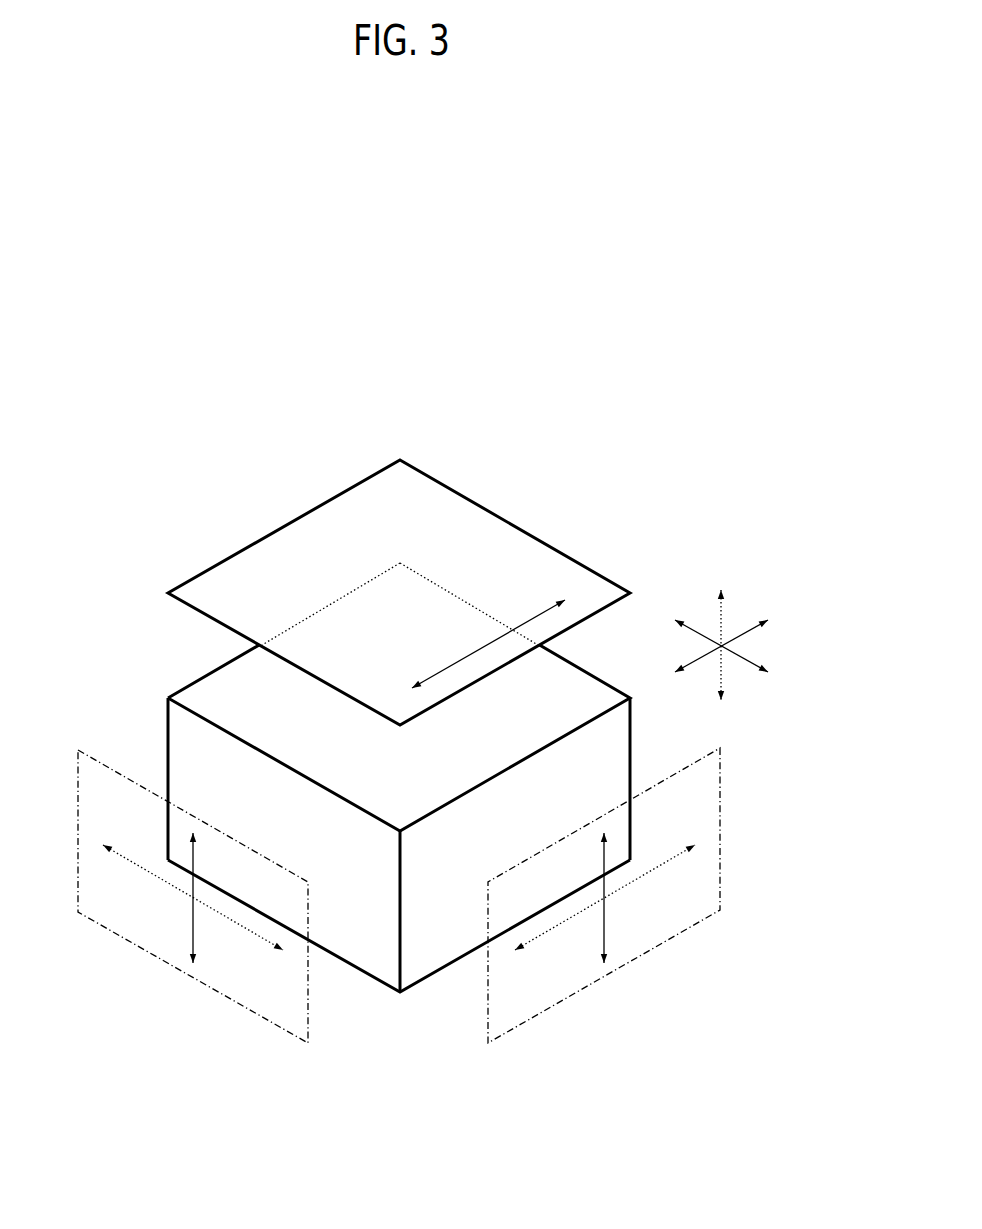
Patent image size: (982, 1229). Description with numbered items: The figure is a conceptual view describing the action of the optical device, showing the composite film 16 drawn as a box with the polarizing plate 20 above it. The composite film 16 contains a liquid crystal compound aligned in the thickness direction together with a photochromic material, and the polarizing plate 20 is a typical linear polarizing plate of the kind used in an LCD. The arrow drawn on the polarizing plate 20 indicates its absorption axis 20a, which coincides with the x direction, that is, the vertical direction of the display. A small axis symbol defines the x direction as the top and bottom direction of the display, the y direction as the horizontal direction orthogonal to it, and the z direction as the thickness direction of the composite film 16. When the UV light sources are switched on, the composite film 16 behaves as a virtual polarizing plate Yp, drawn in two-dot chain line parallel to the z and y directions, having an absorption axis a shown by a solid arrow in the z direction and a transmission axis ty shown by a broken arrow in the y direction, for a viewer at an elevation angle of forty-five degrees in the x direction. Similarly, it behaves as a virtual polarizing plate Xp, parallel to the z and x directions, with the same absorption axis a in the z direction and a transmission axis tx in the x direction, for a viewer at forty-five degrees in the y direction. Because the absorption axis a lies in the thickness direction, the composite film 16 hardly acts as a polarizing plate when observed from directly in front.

The composite film 16 is at (228, 693).
The polarizing plate 20 is at (330, 532).
The absorption axis 20a is at (535, 615).
The polarizing plate Yp is at (197, 982).
The transmission axis ty is at (237, 922).
The polarizing plate Xp is at (620, 968).
The transmission axis tx is at (633, 882).
The absorption axis a is at (192, 922).
The x direction x is at (700, 655).
The y direction y is at (750, 660).
The z direction z is at (722, 612).